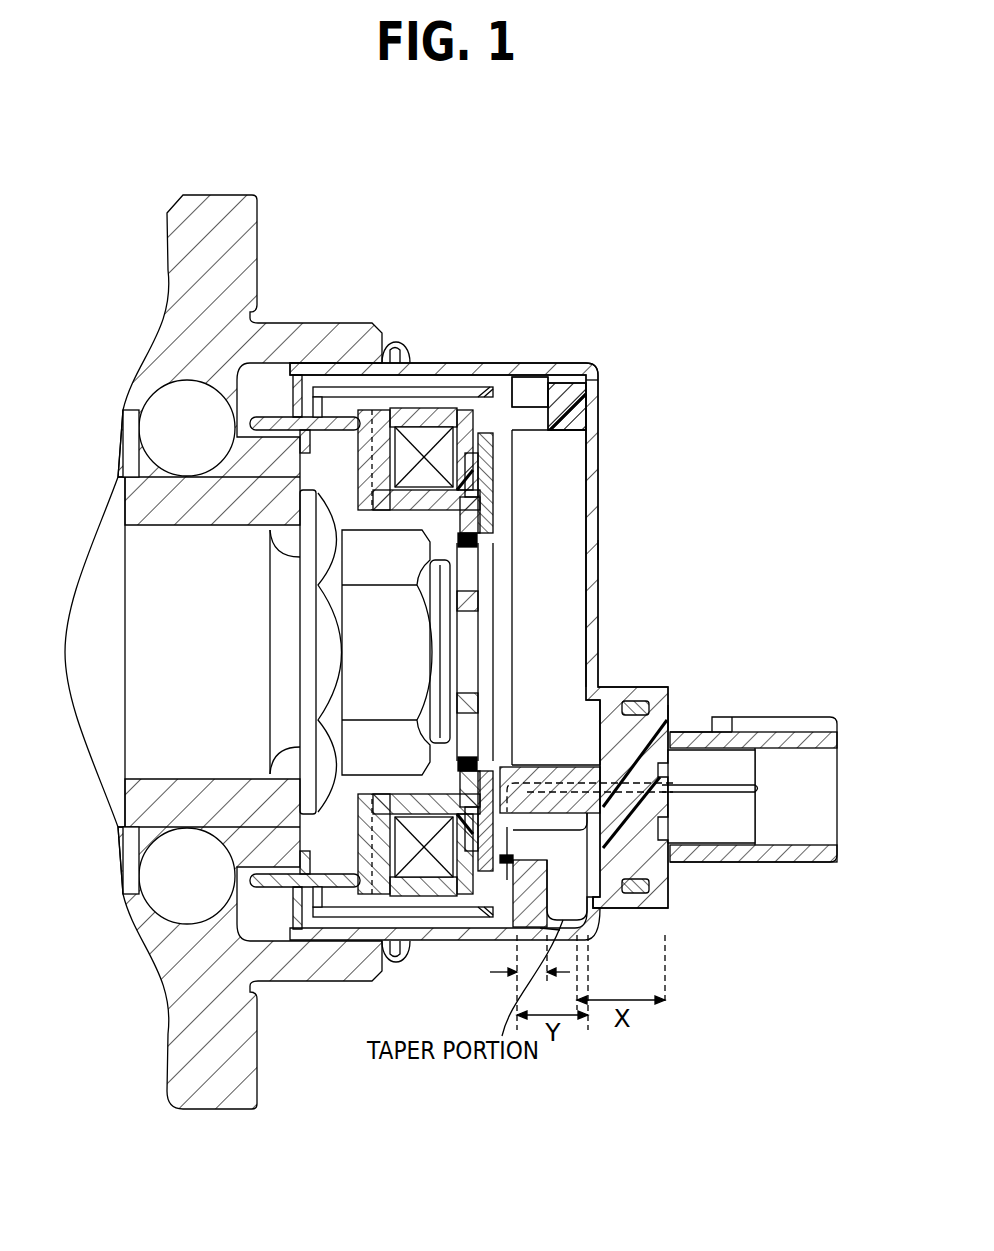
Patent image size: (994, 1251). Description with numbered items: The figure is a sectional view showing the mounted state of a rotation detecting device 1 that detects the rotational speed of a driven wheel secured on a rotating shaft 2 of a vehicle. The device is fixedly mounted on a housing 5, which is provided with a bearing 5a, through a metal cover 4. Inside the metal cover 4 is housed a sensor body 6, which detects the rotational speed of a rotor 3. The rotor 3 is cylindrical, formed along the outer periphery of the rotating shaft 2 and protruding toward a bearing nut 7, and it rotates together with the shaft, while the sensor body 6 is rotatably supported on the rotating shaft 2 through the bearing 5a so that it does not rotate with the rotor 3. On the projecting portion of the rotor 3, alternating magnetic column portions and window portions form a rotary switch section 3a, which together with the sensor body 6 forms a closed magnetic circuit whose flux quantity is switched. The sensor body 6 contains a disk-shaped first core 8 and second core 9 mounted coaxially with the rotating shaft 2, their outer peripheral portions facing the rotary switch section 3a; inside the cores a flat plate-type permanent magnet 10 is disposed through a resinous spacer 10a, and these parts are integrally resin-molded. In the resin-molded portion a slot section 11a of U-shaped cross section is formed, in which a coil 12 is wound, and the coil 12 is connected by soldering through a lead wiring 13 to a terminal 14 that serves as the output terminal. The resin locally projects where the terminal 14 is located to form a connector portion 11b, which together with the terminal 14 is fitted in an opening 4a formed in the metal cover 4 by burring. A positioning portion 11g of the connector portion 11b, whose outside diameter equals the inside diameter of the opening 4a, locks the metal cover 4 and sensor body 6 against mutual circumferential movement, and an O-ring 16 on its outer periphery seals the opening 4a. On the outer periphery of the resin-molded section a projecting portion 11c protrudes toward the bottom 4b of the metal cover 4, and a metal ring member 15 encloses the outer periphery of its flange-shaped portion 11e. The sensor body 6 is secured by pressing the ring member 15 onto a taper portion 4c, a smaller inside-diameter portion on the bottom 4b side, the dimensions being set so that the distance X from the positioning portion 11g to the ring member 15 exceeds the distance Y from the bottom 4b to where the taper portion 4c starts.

The rotation detecting device 1 is at (662, 310).
The rotating shaft 2 is at (147, 583).
The rotor 3 is at (378, 405).
The rotary switch section 3a is at (420, 400).
The metal cover 4 is at (423, 950).
The opening 4a is at (668, 708).
The bottom 4b is at (603, 546).
The taper portion 4c is at (492, 943).
The housing 5 is at (244, 218).
The bearing 5a is at (126, 426).
The sensor body 6 is at (513, 520).
The bearing nut 7 is at (432, 643).
The first core 8 is at (370, 440).
The second core 9 is at (495, 445).
The permanent magnet 10 is at (485, 490).
The resinous spacer 10a is at (480, 470).
The slot section 11a is at (468, 452).
The connector portion 11b is at (748, 870).
The projecting portion 11c is at (525, 405).
The flange-shaped portion 11e is at (597, 380).
The positioning portion 11g is at (690, 885).
The coil 12 is at (436, 430).
The lead wiring 13 is at (495, 865).
The terminal 14 is at (727, 758).
The ring member 15 is at (563, 392).
The O-ring 16 is at (637, 702).